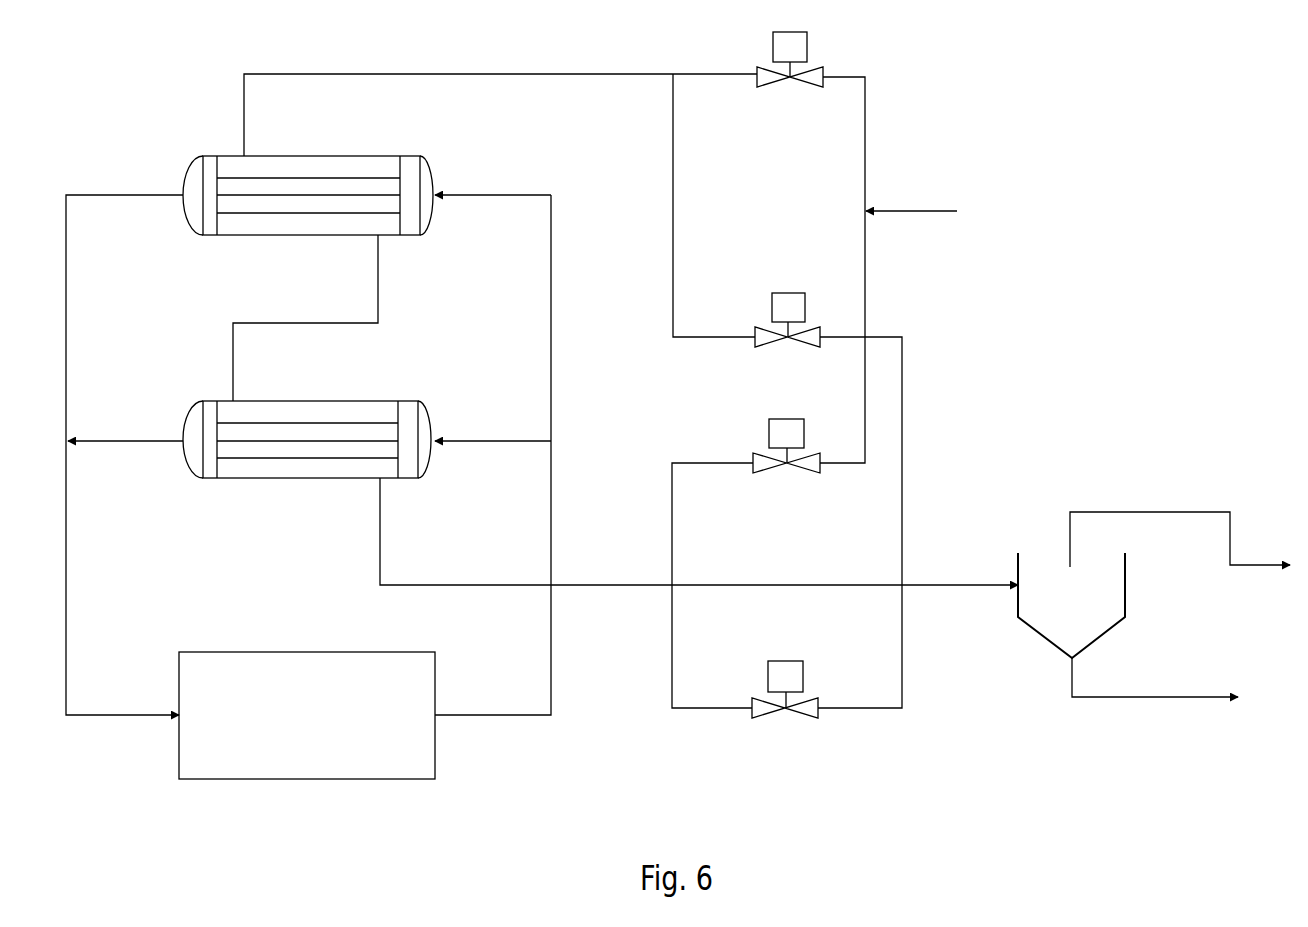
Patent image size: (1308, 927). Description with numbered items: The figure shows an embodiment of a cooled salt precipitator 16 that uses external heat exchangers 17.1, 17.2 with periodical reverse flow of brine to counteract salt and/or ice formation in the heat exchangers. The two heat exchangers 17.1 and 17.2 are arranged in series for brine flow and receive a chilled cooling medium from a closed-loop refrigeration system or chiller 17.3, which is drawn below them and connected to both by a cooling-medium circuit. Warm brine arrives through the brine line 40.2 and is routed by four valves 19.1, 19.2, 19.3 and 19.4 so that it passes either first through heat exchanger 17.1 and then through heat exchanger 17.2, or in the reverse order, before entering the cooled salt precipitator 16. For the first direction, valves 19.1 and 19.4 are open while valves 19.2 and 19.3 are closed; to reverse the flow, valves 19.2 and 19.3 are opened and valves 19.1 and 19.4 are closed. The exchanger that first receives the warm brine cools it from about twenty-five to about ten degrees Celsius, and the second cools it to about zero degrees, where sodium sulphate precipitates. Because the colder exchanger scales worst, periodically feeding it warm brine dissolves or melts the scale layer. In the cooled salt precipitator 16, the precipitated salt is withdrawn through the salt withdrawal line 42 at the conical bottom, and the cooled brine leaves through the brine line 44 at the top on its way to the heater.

The heat exchanger 17.1 is at (406, 157).
The heat exchanger 17.2 is at (406, 402).
The closed-loop refrigeration system or chiller 17.3 is at (423, 652).
The valve 19.1 is at (817, 70).
The valve 19.2 is at (753, 460).
The valve 19.3 is at (755, 333).
The valve 19.4 is at (752, 704).
The brine line 40.2 is at (910, 211).
The cooled salt precipitator 16 is at (1128, 580).
The brine line 44 is at (1205, 510).
The salt withdrawal line 42 is at (1200, 696).